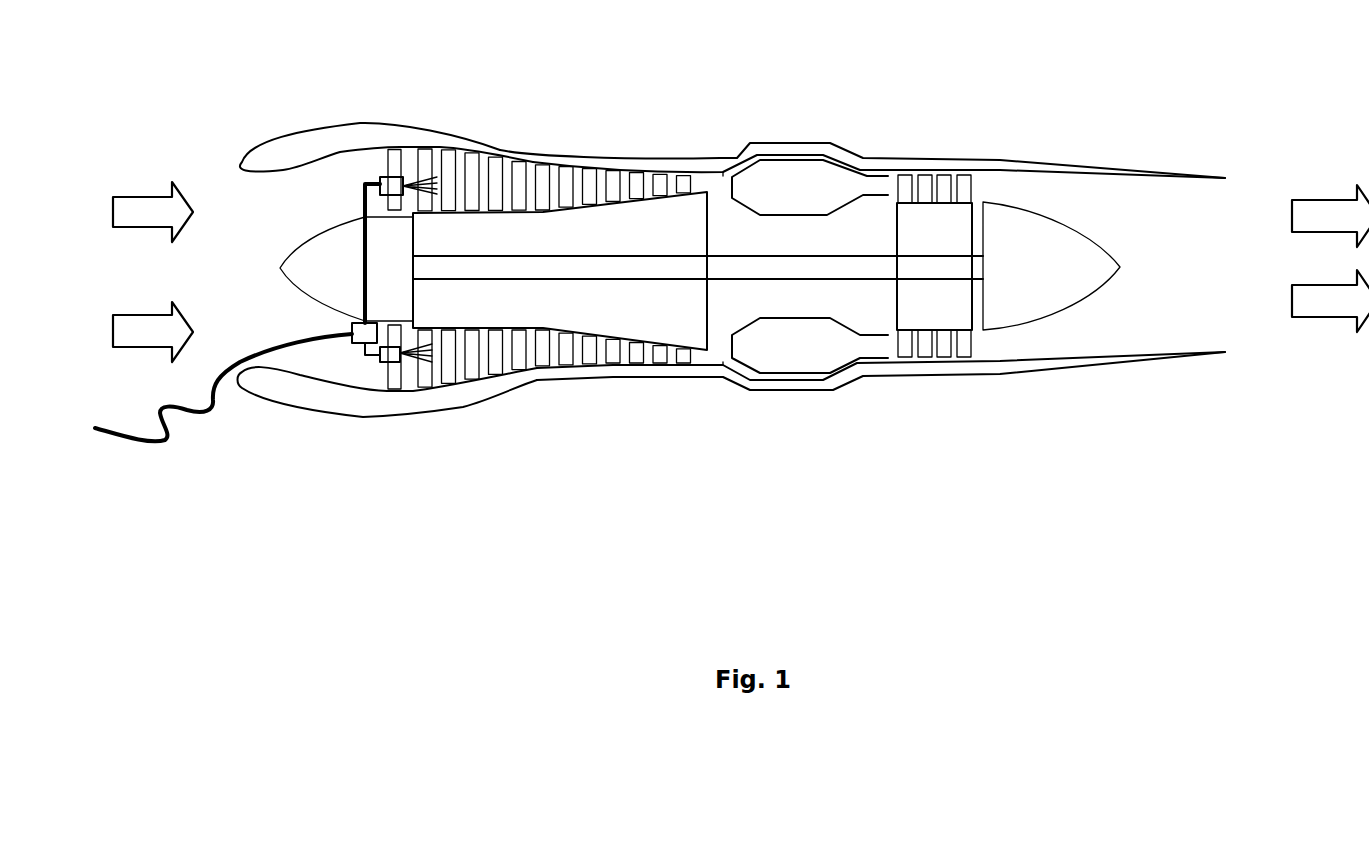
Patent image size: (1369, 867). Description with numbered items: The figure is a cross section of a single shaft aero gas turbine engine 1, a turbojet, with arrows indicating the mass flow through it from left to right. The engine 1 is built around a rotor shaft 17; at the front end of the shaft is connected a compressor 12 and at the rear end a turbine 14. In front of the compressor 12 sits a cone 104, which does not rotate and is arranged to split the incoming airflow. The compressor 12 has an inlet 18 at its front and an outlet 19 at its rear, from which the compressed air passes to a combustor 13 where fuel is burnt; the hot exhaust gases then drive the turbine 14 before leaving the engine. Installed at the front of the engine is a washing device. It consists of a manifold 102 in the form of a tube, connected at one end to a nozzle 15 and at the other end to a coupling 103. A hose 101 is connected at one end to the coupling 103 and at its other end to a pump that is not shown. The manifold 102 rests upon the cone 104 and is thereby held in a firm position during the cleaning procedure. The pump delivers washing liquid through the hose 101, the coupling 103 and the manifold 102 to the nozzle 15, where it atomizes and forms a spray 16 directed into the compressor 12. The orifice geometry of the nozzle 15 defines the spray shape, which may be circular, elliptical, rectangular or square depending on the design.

The engine 1 is at (972, 443).
The compressor 12 is at (517, 233).
The combustor 13 is at (792, 183).
The turbine 14 is at (918, 220).
The nozzle 15 is at (383, 365).
The spray 16 is at (428, 365).
The rotor shaft 17 is at (745, 265).
The inlet 18 is at (368, 165).
The outlet 19 is at (716, 180).
The hose 101 is at (165, 443).
The manifold 102 is at (363, 203).
The coupling 103 is at (352, 332).
The cone 104 is at (323, 263).